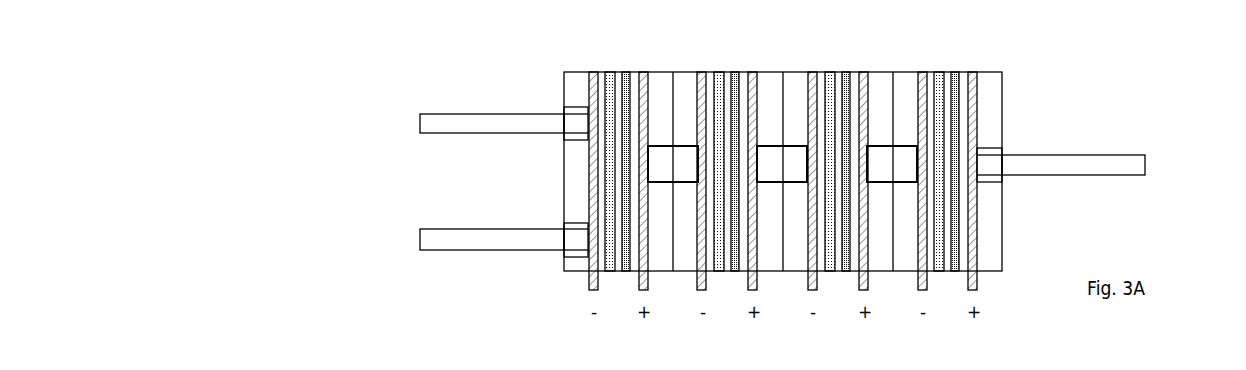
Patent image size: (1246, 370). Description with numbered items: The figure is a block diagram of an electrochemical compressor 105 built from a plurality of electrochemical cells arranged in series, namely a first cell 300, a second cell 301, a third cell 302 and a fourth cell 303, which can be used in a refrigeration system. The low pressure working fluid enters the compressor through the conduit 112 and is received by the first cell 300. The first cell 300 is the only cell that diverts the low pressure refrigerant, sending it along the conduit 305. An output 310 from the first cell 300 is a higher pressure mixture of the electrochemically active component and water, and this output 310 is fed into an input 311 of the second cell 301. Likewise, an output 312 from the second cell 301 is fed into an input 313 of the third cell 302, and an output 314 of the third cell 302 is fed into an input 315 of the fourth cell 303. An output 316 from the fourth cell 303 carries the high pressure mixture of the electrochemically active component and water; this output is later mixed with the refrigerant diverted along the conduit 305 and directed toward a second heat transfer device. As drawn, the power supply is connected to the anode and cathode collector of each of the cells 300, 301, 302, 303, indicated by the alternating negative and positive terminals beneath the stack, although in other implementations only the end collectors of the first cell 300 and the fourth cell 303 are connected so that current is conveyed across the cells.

The electrochemical compressor 105 is at (1051, 38).
The conduit 112 is at (500, 113).
The first cell 300 is at (615, 64).
The second cell 301 is at (731, 65).
The third cell 302 is at (835, 64).
The fourth cell 303 is at (943, 63).
The conduit 305 is at (470, 250).
The output 310 is at (660, 182).
The input 311 is at (688, 182).
The output 312 is at (773, 182).
The input 313 is at (793, 182).
The output 314 is at (879, 182).
The input 315 is at (907, 182).
The output 316 is at (1083, 175).